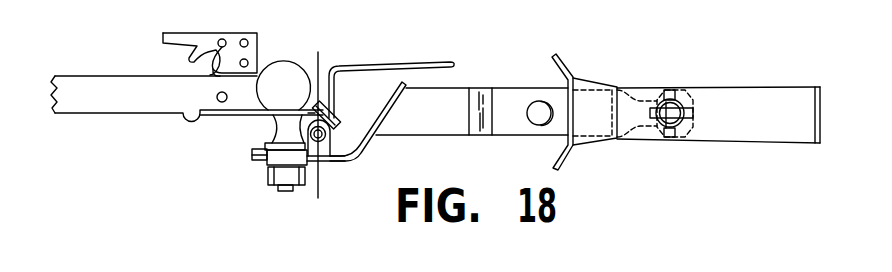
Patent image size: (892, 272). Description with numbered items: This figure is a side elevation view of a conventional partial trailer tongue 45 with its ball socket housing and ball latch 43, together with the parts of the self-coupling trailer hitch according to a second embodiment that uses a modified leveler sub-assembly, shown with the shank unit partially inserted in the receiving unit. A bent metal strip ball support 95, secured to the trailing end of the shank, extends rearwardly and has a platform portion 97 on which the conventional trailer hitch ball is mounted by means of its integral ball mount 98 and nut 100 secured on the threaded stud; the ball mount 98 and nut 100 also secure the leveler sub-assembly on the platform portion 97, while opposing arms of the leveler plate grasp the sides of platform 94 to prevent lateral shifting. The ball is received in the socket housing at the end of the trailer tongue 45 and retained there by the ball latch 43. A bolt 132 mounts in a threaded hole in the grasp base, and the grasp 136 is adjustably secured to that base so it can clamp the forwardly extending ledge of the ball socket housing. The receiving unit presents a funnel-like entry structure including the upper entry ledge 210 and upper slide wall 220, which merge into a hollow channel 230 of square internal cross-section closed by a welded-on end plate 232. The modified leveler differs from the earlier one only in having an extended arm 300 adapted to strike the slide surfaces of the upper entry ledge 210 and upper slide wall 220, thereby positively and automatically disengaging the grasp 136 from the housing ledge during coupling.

The ball latch 43 is at (239, 33).
The trailer tongue 45 is at (60, 113).
The platform 94 is at (530, 127).
The bent metal strip ball support 95 is at (368, 145).
The platform portion 97 is at (333, 163).
The ball mount 98 is at (278, 125).
The nut 100 is at (267, 176).
The bolt 132 is at (331, 118).
The grasp 136 is at (315, 102).
The upper entry ledge 210 is at (563, 58).
The upper slide wall 220 is at (593, 78).
The hollow channel 230 is at (784, 60).
The end plate 232 is at (815, 147).
The extended arm 300 is at (416, 44).